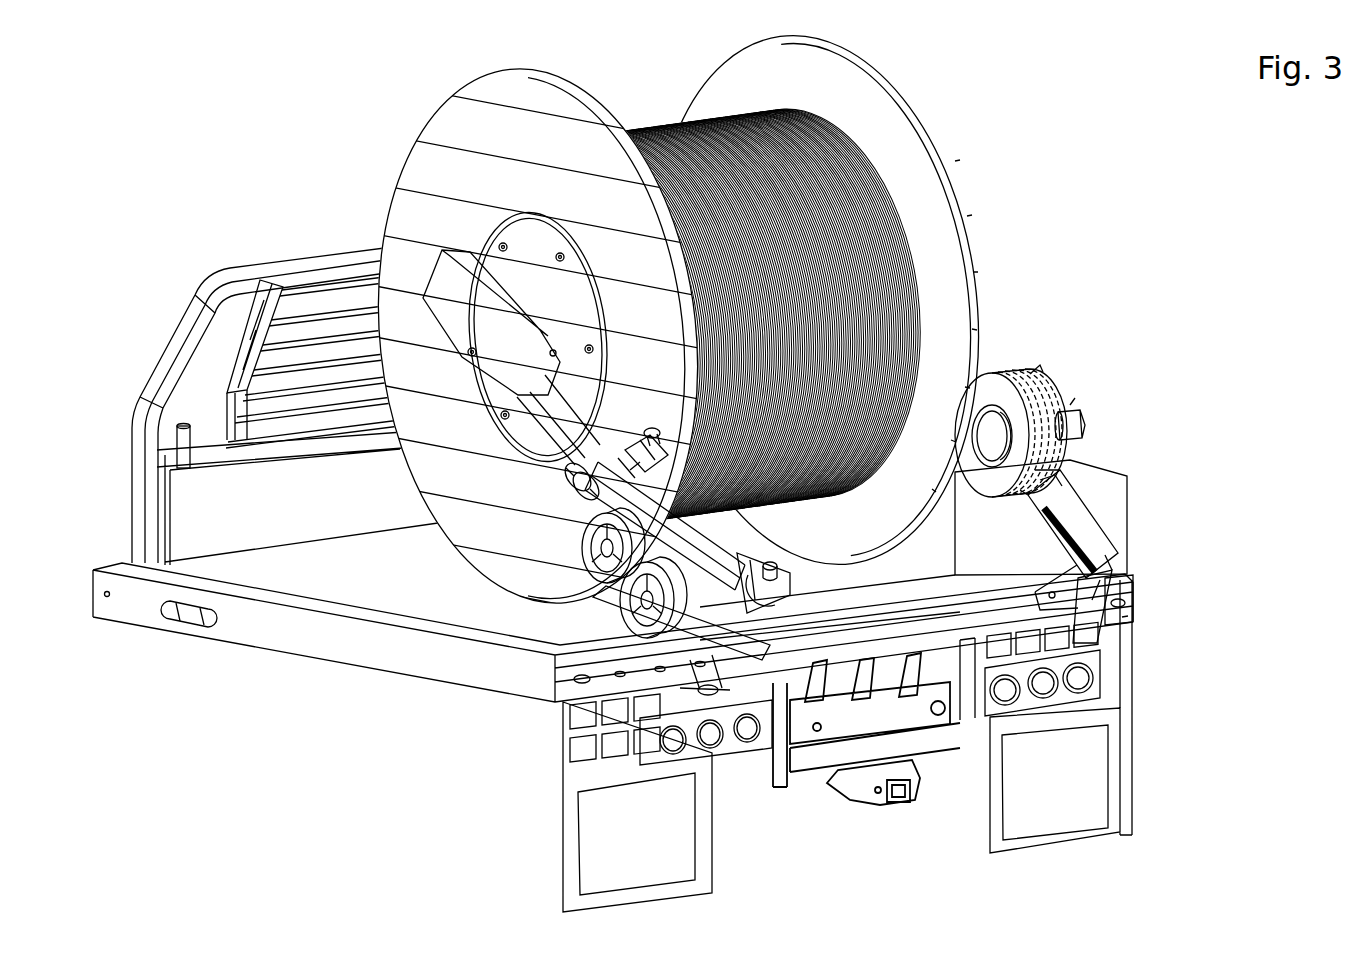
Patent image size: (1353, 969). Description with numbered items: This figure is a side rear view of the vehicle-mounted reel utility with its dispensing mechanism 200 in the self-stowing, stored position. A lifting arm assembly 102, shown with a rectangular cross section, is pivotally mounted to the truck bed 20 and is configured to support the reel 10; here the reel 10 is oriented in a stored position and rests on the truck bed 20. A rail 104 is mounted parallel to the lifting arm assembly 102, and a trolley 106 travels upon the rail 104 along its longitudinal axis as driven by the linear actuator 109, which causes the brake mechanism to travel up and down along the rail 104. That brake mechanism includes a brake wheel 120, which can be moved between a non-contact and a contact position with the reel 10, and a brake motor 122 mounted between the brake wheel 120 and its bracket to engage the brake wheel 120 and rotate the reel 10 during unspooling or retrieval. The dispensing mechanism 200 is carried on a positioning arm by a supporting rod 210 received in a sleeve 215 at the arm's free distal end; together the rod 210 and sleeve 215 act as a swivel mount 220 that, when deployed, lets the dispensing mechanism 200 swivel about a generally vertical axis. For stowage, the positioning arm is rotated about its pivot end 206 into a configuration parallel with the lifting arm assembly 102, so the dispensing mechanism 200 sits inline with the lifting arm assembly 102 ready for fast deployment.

The reel 10 is at (872, 56).
The truck bed 20 is at (340, 638).
The lifting arm assembly 102 is at (508, 457).
The rail 104 is at (1112, 560).
The trolley 106 is at (1073, 447).
The linear actuator 109 is at (1060, 520).
The brake wheel 120 is at (1028, 373).
The brake motor 122 is at (1070, 403).
The dispensing mechanism 200 is at (587, 618).
The pivot end 206 is at (782, 555).
The supporting rod 210 is at (590, 493).
The sleeve 215 is at (577, 467).
The swivel mount 220 is at (570, 483).